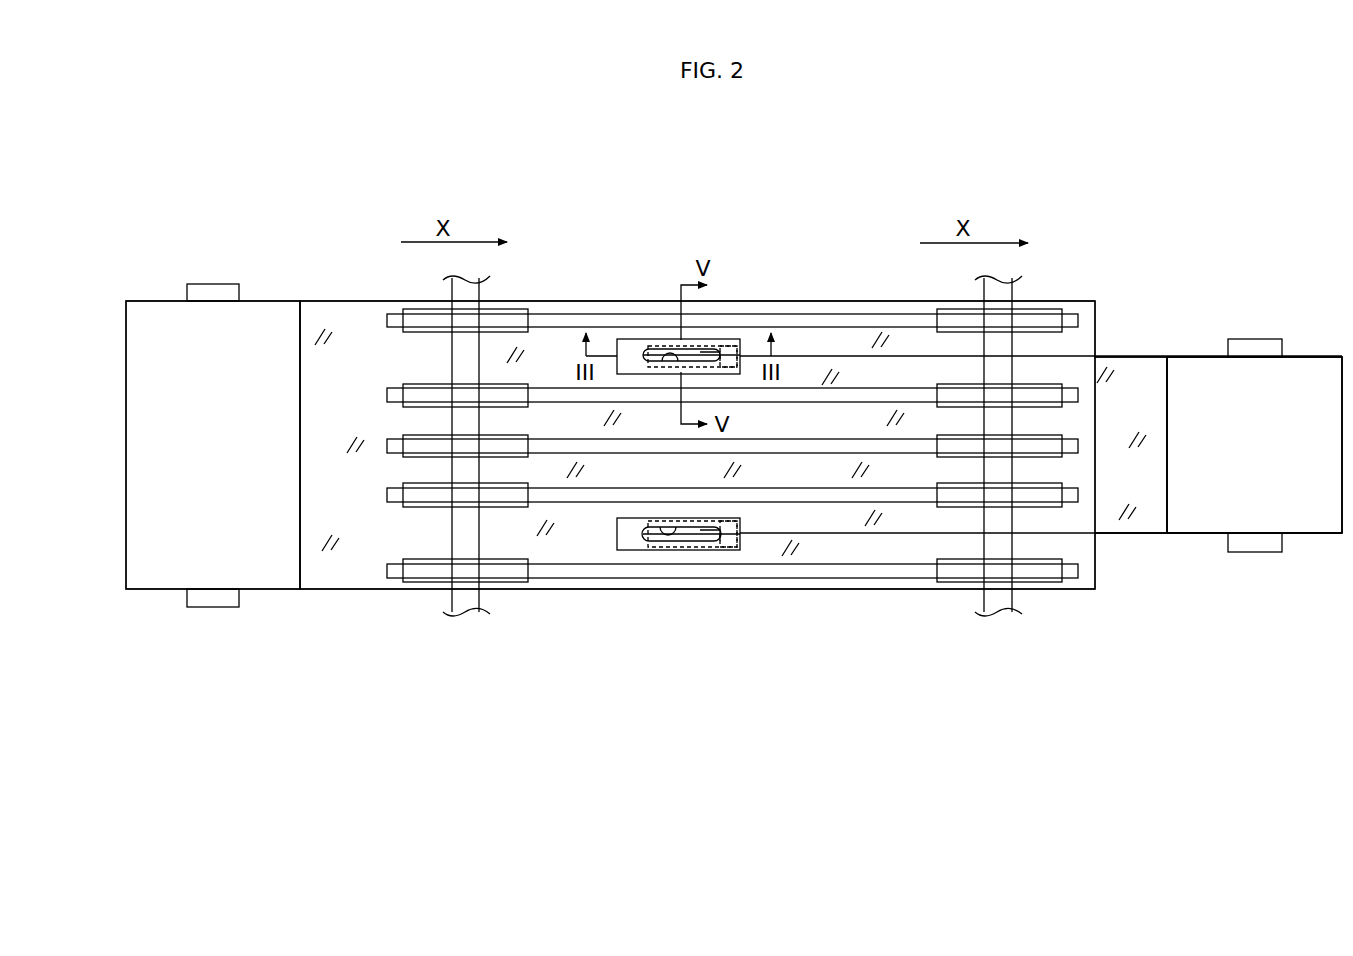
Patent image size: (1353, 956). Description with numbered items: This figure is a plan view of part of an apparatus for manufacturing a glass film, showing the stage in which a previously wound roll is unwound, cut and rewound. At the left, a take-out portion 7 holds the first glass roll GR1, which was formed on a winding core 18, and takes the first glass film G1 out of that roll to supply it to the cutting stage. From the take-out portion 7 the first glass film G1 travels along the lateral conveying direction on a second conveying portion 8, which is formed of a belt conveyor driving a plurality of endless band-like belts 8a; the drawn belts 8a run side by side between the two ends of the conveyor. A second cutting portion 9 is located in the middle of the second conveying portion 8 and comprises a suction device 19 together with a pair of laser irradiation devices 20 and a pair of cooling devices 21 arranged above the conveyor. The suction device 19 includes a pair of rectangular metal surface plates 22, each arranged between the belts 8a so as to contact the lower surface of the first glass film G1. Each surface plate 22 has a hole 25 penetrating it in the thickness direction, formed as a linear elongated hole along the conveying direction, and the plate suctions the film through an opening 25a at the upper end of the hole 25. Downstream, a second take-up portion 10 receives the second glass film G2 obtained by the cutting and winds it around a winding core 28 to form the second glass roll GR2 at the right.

The take-out portion 7 is at (162, 270).
The winding core 18 is at (213, 284).
The winding core 28 is at (1255, 339).
The second conveying portion 8 is at (420, 600).
The belt 8a is at (535, 312).
The second cutting portion 9 is at (646, 337).
The second take-up portion 10 is at (1216, 560).
The suction device 19 is at (722, 346).
The laser irradiation device 20 is at (712, 347).
The cooling device 21 is at (738, 350).
The surface plate 22 is at (617, 345).
The hole 25 is at (663, 350).
The opening 25a is at (668, 362).
The first glass film G1 is at (340, 589).
The second glass film G2 is at (1136, 533).
The first glass roll GR1 is at (150, 560).
The second glass roll GR2 is at (1318, 518).